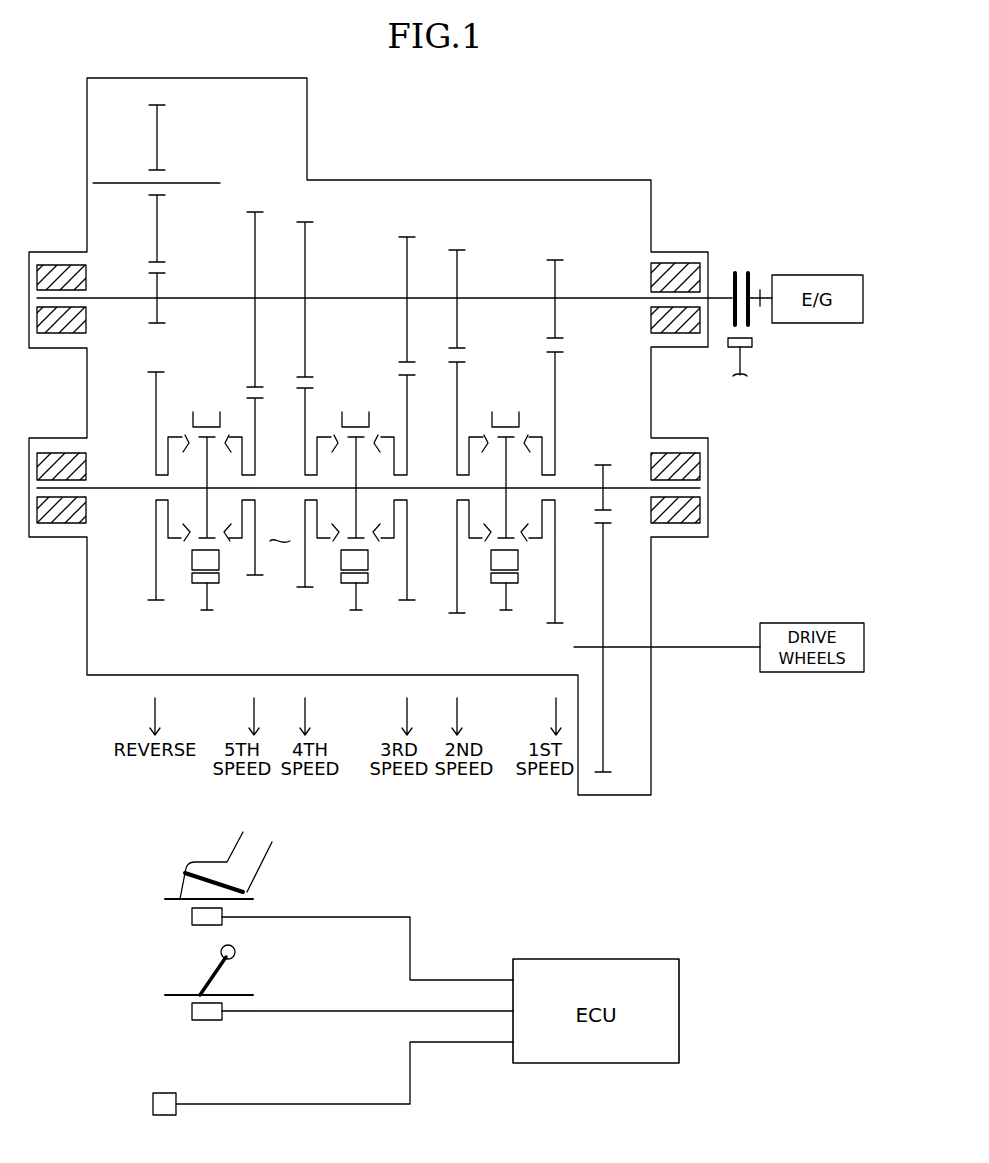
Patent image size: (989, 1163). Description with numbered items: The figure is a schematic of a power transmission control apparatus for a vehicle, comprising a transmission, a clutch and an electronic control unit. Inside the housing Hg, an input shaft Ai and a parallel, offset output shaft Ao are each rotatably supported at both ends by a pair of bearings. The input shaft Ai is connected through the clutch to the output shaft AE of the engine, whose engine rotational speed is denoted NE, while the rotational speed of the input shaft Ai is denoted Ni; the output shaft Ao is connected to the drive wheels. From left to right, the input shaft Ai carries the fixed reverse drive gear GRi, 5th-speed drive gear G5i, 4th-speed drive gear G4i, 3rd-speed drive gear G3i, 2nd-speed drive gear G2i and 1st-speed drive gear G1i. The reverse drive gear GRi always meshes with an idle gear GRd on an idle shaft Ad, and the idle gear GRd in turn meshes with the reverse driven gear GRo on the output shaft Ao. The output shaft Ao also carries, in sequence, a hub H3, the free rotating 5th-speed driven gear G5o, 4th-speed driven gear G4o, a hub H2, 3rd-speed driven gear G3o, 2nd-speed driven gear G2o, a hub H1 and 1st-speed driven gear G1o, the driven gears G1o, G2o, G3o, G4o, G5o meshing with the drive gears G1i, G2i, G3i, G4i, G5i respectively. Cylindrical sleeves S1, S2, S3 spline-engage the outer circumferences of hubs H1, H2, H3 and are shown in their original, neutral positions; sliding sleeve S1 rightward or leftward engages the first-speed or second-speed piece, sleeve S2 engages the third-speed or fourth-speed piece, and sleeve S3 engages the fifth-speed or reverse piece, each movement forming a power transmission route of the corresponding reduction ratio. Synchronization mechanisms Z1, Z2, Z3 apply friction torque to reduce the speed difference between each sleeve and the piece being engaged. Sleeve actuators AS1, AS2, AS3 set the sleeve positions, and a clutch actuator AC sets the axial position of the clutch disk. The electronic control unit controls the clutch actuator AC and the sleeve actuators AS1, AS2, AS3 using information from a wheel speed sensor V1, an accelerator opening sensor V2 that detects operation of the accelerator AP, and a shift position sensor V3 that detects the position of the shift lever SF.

The housing Hg is at (651, 201).
The input shaft Ai is at (595, 298).
The rotational speed of the input shaft Ni is at (602, 236).
The output shaft Ao is at (578, 487).
The idle shaft Ad is at (186, 185).
The idle gear GRd is at (160, 228).
The reverse drive gear GRi is at (160, 288).
The reverse driven gear GRo is at (156, 580).
The 5th-speed drive gear G5i is at (254, 338).
The 4th-speed drive gear G4i is at (305, 308).
The 3rd-speed drive gear G3i is at (406, 322).
The 2nd-speed drive gear G2i is at (456, 320).
The 1st-speed drive gear G1i is at (554, 320).
The 5th-speed driven gear G5o is at (254, 410).
The 4th-speed driven gear G4o is at (304, 410).
The 3rd-speed driven gear G3o is at (406, 392).
The 2nd-speed driven gear G2o is at (456, 398).
The 1st-speed driven gear G1o is at (554, 377).
The hub H1 is at (506, 447).
The hub H2 is at (356, 447).
The hub H3 is at (207, 447).
The sleeve S1 is at (491, 562).
The sleeve S2 is at (341, 562).
The sleeve S3 is at (192, 562).
The synchronization mechanism Z1 is at (476, 542).
The synchronization mechanism Z2 is at (322, 542).
The synchronization mechanism Z3 is at (180, 542).
The sleeve actuator AS1 is at (512, 585).
The sleeve actuator AS2 is at (362, 585).
The sleeve actuator AS3 is at (212, 585).
The output shaft of the engine AE is at (760, 290).
The engine rotational speed NE is at (787, 206).
The clutch actuator AC is at (754, 343).
The accelerator AP is at (182, 878).
The accelerator opening sensor V2 is at (192, 917).
The shift lever SF is at (208, 975).
The shift position sensor V3 is at (192, 1011).
The wheel speed sensor V1 is at (166, 1092).